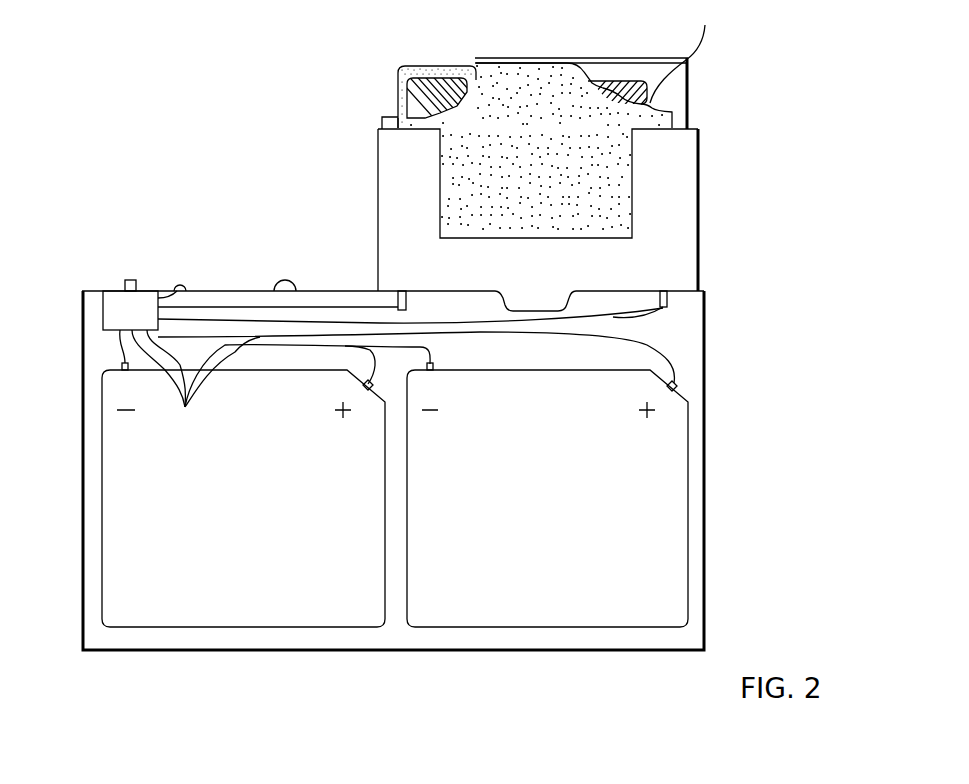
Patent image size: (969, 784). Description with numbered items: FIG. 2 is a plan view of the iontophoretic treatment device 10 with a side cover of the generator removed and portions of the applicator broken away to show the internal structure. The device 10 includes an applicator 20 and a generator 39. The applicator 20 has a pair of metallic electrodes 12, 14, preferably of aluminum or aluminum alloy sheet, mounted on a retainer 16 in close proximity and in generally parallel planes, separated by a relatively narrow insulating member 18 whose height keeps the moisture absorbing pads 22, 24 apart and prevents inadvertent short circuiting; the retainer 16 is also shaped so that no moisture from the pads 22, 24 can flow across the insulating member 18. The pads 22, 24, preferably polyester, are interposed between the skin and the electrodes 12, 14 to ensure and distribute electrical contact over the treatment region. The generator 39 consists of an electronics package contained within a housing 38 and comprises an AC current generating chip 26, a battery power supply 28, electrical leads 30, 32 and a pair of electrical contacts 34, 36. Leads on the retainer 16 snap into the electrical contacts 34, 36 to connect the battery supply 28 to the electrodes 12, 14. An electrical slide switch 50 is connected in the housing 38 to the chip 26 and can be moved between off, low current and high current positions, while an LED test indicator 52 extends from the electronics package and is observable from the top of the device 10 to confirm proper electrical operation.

The iontophoretic treatment device 10 is at (775, 90).
The metallic electrode 12 is at (683, 51).
The metallic electrode 14 is at (428, 88).
The retainer 16 is at (398, 181).
The insulating member 18 is at (651, 58).
The applicator 20 is at (703, 60).
The moisture absorbing pad 22 is at (537, 87).
The moisture absorbing pad 24 is at (448, 68).
The AC current generating chip 26 is at (113, 308).
The battery power supply 28 is at (230, 613).
The electrical lead 30 is at (397, 382).
The electrical lead 32 is at (310, 303).
The electrical contact 34 is at (703, 295).
The electrical contact 36 is at (397, 301).
The housing 38 is at (705, 383).
The generator 39 is at (73, 293).
The electrical slide switch 50 is at (137, 279).
The LED test indicator 52 is at (195, 286).